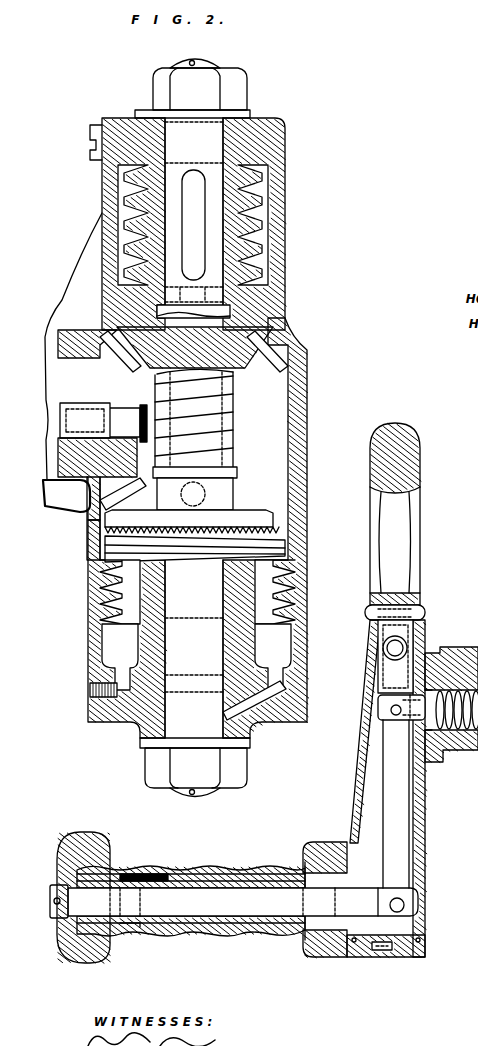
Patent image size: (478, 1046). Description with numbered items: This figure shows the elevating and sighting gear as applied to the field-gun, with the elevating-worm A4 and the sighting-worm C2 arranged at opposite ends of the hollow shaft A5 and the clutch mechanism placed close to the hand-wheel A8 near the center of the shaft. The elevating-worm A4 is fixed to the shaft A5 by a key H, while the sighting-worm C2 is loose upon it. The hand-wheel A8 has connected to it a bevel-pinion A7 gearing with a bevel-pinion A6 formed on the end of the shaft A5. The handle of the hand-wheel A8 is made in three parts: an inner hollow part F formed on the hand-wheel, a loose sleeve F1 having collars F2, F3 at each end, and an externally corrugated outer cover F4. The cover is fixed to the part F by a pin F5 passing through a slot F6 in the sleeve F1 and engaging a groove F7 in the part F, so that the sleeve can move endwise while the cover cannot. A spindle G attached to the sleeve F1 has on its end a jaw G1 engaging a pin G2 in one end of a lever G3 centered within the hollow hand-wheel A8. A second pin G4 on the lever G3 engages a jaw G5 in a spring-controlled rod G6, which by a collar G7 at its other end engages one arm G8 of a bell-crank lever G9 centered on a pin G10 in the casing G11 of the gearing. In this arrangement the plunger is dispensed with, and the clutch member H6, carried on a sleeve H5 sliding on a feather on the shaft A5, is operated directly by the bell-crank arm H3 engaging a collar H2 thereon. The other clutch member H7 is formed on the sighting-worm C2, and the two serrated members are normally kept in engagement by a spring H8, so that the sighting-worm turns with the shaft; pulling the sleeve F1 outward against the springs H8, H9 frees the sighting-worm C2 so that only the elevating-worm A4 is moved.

The elevating-worm A4 is at (132, 249).
The shaft A5 is at (194, 428).
The bevel-pinion A6 is at (268, 352).
The bevel-pinion A7 is at (103, 338).
The elevating hand-wheel A8 is at (398, 690).
The sighting-worm C2 is at (105, 552).
The inner hollow part F is at (218, 884).
The loose sleeve F1 is at (258, 873).
The collar F2 is at (80, 842).
The collar F3 is at (322, 842).
The outer cover F4 is at (191, 866).
The pin F5 is at (126, 878).
The slot F6 is at (158, 875).
The groove F7 is at (132, 932).
The spindle G is at (234, 901).
The jaw G1 is at (398, 898).
The pin G2 is at (389, 906).
The lever G3 is at (396, 804).
The second pin G4 is at (396, 716).
The jaw G5 is at (395, 656).
The spring-controlled rod G6 is at (418, 663).
The collar G7 is at (143, 404).
The arm G8 is at (100, 420).
The bell-crank lever G9 is at (90, 497).
The pin G10 is at (88, 527).
The casing G11 is at (198, 395).
The key H is at (193, 225).
The collar H2 is at (234, 476).
The arm H3 is at (195, 494).
The sleeve H5 is at (223, 435).
The clutch member H6 is at (237, 512).
The clutch member H7 is at (273, 530).
The spring H8 is at (460, 750).
The spring H9 is at (228, 428).